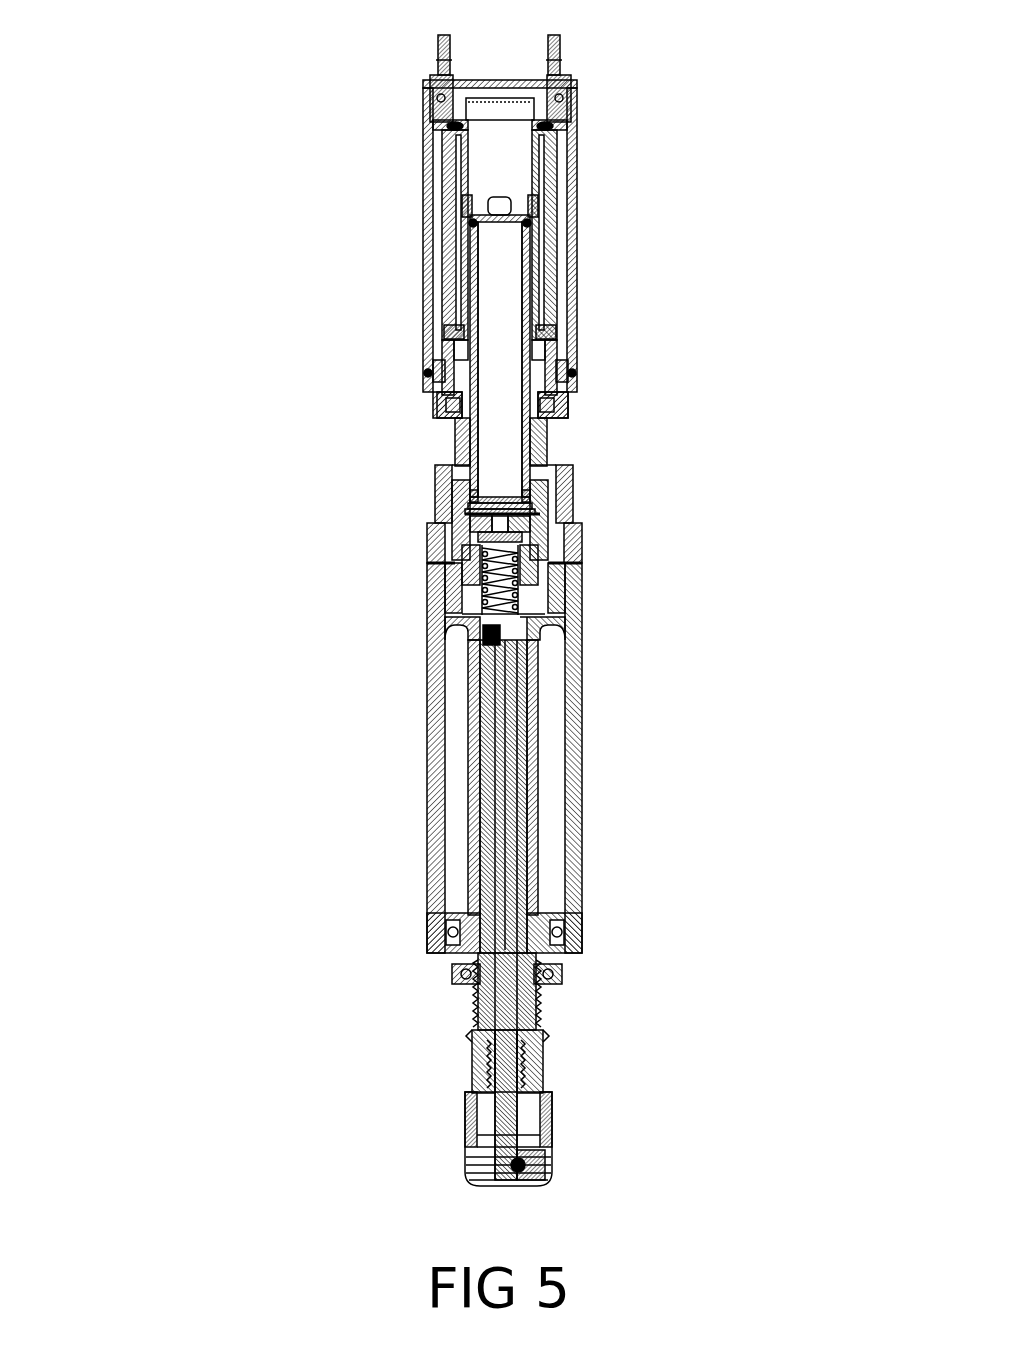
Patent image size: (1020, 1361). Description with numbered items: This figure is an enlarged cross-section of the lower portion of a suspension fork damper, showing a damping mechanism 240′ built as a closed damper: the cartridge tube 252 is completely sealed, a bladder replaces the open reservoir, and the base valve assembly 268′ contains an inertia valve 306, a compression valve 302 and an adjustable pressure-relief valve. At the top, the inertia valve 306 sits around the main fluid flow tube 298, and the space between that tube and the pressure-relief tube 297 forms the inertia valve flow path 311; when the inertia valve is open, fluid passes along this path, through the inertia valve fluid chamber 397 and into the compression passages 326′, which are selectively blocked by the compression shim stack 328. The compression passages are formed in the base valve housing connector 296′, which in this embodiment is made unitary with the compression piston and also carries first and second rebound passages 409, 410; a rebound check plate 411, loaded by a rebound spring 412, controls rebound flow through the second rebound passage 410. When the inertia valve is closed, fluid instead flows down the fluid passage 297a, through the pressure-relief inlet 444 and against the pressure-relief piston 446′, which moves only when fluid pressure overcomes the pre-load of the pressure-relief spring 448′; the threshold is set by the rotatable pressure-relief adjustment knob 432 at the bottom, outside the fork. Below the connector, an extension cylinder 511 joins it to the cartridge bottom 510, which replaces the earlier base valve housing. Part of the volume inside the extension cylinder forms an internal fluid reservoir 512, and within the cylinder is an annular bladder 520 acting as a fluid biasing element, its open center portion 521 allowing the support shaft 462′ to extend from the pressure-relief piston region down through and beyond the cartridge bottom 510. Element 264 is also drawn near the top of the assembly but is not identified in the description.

The damping mechanism 240′ is at (150, 365).
The cartridge tube 252 is at (405, 165).
The electrical pins 264 is at (490, 62).
The base valve assembly 268′ is at (345, 284).
The base valve housing connector 296′ is at (453, 465).
The pressure-relief tube 297 is at (521, 298).
The fluid passage 297a is at (493, 262).
The main fluid flow tube 298 is at (572, 373).
The compression valve 302 is at (608, 554).
The inertia valve 306 is at (575, 179).
The inertia valve flow path 311 is at (535, 332).
The compression passages 326′ is at (470, 508).
The compression shim stack 328 is at (462, 565).
The inertia valve fluid chamber 397 is at (568, 462).
The first rebound passage 409 is at (545, 614).
The second rebound passage 410 is at (560, 500).
The rebound check plate 411 is at (475, 505).
The rebound spring 412 is at (478, 495).
The pressure-relief adjustment knob 432 is at (483, 1162).
The pressure-relief inlet 444 is at (500, 500).
The pressure-relief piston 446′ is at (548, 562).
The pressure-relief spring 448′ is at (478, 572).
The support shaft 462′ is at (507, 1075).
The cartridge bottom 510 is at (443, 953).
The extension cylinder 511 is at (428, 772).
The internal fluid reservoir 512 is at (455, 620).
The bladder 520 is at (458, 628).
The open center portion 521 is at (475, 855).